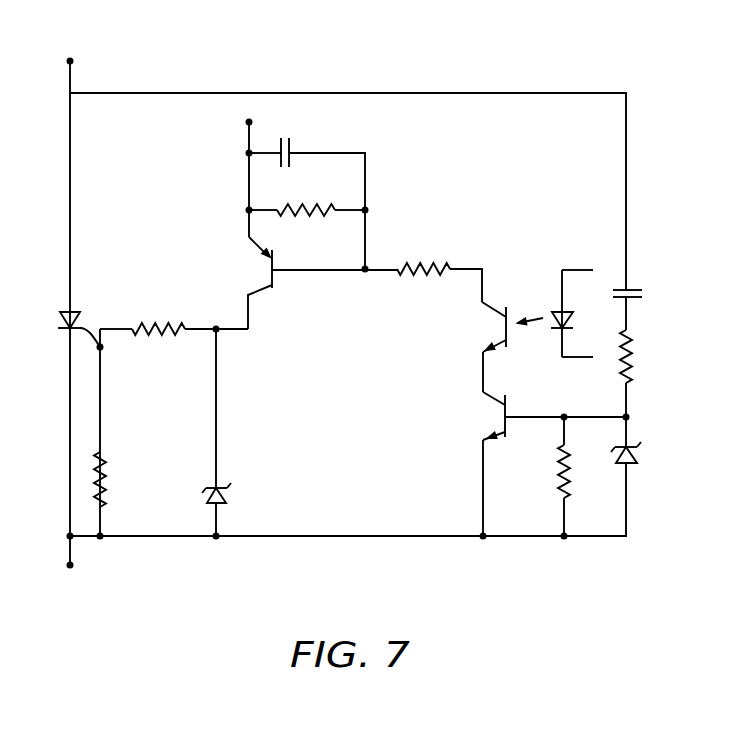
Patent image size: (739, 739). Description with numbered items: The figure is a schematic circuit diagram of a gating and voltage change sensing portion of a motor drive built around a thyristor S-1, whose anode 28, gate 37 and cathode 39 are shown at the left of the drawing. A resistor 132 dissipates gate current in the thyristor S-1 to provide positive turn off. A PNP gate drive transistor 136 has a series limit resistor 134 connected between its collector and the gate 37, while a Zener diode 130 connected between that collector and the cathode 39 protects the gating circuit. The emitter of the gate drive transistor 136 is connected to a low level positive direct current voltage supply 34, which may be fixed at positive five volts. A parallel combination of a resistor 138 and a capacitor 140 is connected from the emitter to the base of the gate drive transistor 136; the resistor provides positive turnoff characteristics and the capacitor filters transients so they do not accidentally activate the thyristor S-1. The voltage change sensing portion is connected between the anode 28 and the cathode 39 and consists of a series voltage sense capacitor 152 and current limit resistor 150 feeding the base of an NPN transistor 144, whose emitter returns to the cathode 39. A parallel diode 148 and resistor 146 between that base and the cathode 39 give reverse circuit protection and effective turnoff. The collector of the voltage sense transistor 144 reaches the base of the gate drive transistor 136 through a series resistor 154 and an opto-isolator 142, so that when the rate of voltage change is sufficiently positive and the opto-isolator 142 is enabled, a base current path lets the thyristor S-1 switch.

The anode 28 is at (73, 58).
The cathode 39 is at (72, 568).
The low level positive direct current voltage supply 34 is at (247, 121).
The thyristor S-1 is at (60, 322).
The gate 37 is at (103, 347).
The series limit resistor 134 is at (157, 322).
The resistor 132 is at (105, 481).
The Zener diode 130 is at (228, 493).
The PNP gate drive transistor 136 is at (262, 287).
The resistor 138 is at (302, 214).
The capacitor 140 is at (290, 146).
The resistor 154 is at (422, 265).
The opto-isolator 142 is at (488, 302).
The NPN transistor 144 is at (508, 425).
The resistor 146 is at (560, 473).
The diode 148 is at (638, 455).
The current limit resistor 150 is at (637, 372).
The voltage sense capacitor 152 is at (635, 288).